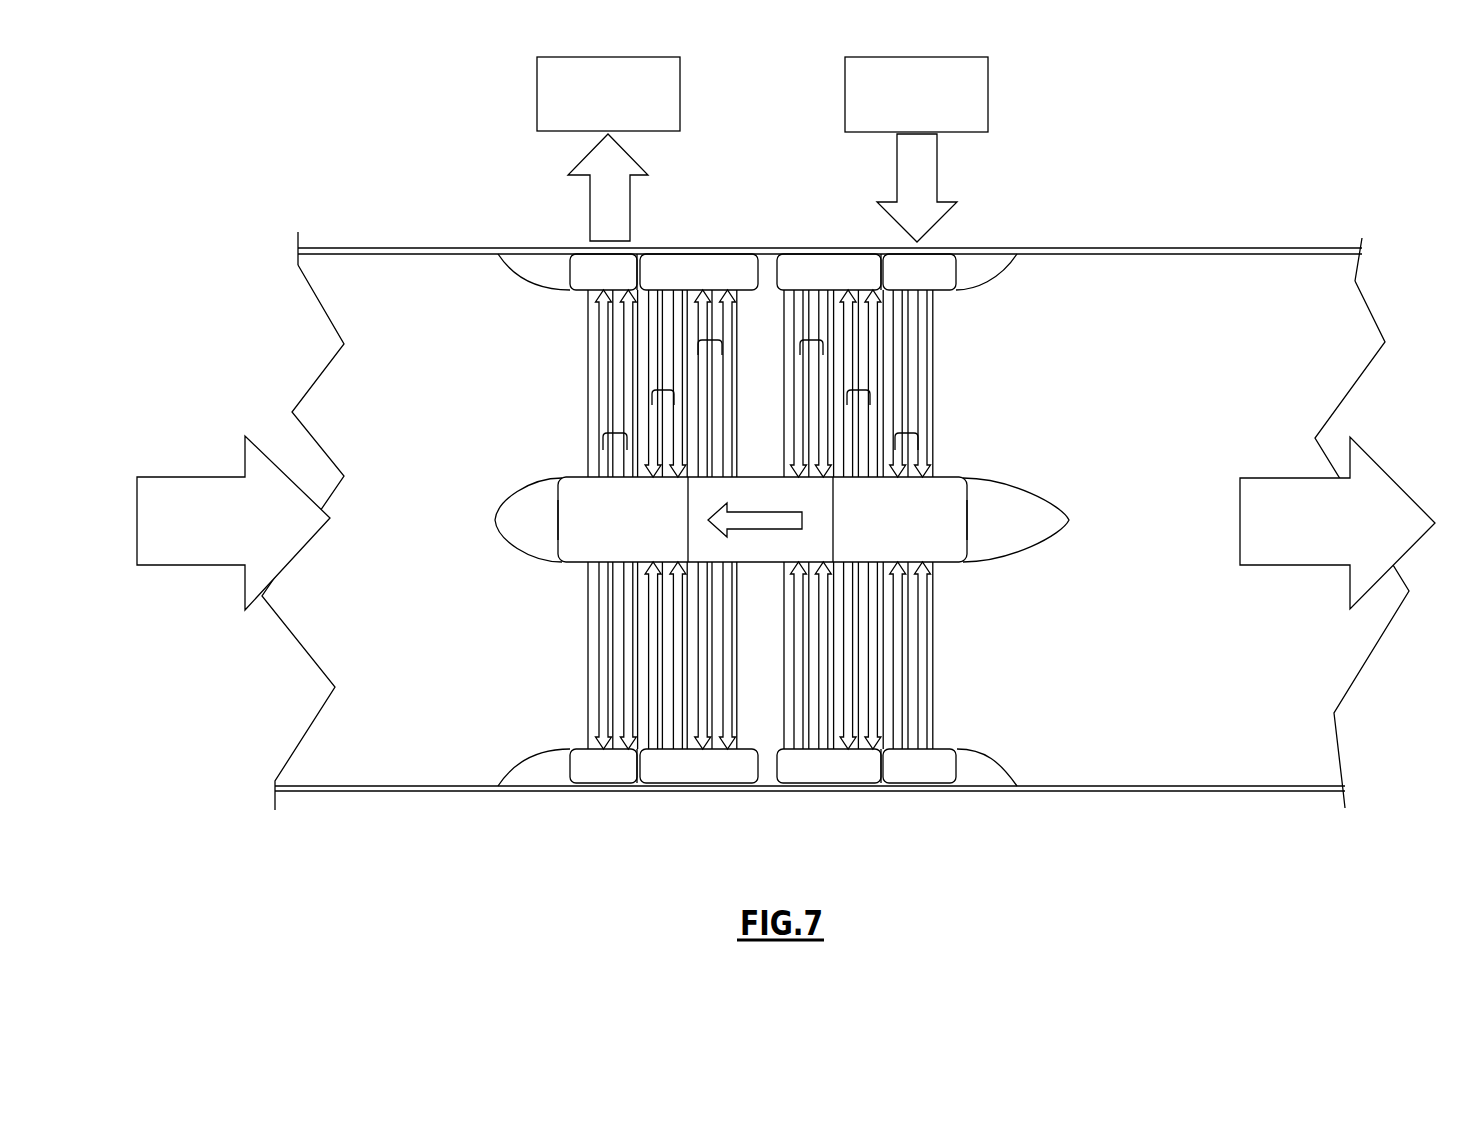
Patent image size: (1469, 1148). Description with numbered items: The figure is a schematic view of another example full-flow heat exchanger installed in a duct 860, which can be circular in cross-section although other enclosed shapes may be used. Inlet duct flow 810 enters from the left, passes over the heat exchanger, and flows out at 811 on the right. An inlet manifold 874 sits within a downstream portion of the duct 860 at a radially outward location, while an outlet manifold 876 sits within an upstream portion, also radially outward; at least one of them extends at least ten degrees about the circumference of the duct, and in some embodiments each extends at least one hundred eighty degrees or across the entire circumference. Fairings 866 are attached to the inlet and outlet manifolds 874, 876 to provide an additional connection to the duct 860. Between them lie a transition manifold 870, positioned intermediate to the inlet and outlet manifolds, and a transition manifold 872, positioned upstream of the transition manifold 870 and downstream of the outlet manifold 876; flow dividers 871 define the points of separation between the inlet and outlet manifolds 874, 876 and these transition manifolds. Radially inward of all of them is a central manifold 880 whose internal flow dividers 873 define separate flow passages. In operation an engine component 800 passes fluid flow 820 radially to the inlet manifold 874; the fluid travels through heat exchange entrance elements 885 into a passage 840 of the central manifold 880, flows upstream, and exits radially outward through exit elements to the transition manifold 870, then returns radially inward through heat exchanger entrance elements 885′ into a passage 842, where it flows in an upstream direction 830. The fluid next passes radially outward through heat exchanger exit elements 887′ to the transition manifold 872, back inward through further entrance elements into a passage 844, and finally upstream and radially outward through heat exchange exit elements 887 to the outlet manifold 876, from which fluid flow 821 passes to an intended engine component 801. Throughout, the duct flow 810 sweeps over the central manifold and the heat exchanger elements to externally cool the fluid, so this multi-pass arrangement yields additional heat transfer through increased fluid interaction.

The engine component 800 is at (988, 93).
The intended engine component 801 is at (537, 92).
The duct flow 810 is at (195, 477).
The duct outflow 811 is at (1388, 470).
The fluid flow 820 is at (937, 168).
The fluid flow 821 is at (573, 165).
The upstream direction 830 is at (818, 504).
The passage 840 is at (963, 497).
The passage 842 is at (765, 548).
The passage 844 is at (570, 497).
The duct 860 is at (390, 250).
The fairings 866 is at (507, 280).
The transition manifold 870 is at (838, 282).
The flow dividers 871 is at (637, 242).
The transition manifold 872 is at (701, 282).
The internal flow dividers 873 is at (675, 522).
The inlet manifold 874 is at (948, 283).
The outlet manifold 876 is at (598, 282).
The central manifold 880 is at (488, 550).
The heat exchange entrance elements 885 is at (907, 433).
The heat exchanger entrance elements 885′ is at (812, 340).
The heat exchange exit elements 887 is at (615, 433).
The heat exchanger exit elements 887′ is at (710, 340).